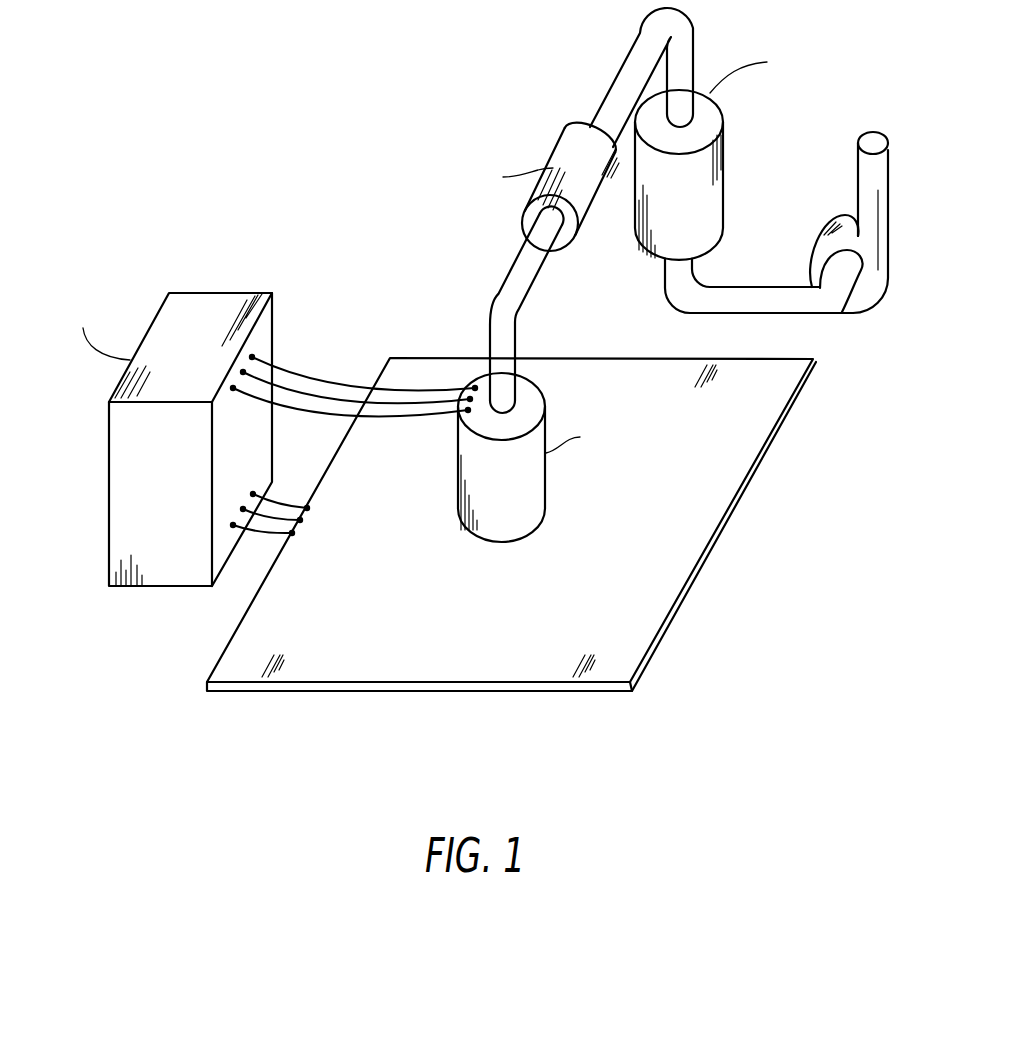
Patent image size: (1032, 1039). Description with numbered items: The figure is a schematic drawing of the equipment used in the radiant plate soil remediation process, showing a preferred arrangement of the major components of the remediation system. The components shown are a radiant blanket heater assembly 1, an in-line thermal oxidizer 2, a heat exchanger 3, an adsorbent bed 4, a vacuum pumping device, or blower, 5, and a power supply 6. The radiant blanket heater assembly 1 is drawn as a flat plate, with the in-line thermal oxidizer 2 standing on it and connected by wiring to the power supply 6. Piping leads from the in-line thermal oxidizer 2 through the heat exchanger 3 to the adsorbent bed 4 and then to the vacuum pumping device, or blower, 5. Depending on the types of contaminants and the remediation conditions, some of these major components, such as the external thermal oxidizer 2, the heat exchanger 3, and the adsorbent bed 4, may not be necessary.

The radiant blanket heater assembly 1 is at (708, 514).
The in-line thermal oxidizer 2 is at (468, 448).
The heat exchanger 3 is at (568, 143).
The adsorbent bed 4 is at (717, 198).
The vacuum pumping device, or blower 5 is at (868, 283).
The power supply 6 is at (200, 302).